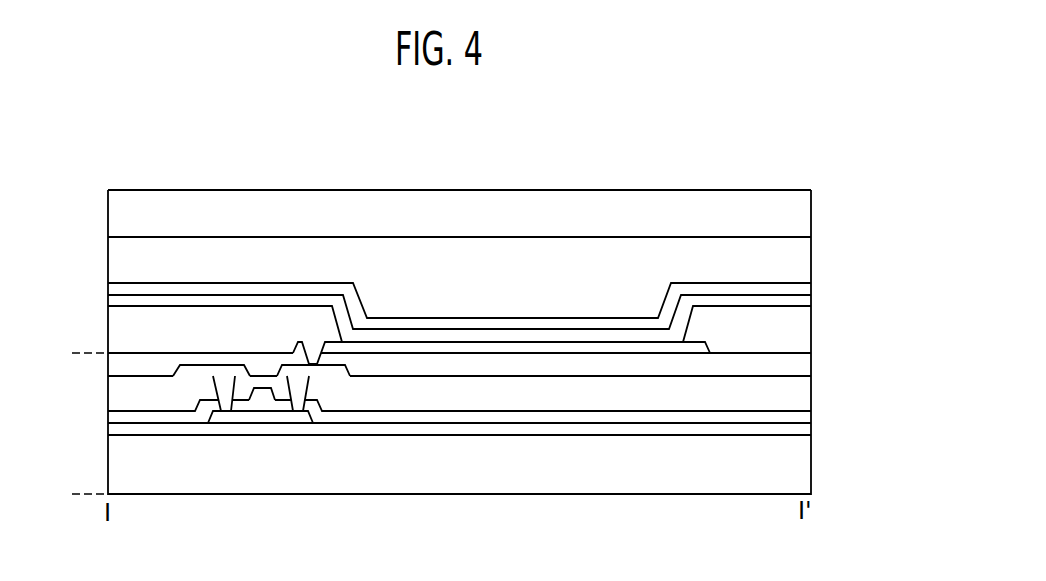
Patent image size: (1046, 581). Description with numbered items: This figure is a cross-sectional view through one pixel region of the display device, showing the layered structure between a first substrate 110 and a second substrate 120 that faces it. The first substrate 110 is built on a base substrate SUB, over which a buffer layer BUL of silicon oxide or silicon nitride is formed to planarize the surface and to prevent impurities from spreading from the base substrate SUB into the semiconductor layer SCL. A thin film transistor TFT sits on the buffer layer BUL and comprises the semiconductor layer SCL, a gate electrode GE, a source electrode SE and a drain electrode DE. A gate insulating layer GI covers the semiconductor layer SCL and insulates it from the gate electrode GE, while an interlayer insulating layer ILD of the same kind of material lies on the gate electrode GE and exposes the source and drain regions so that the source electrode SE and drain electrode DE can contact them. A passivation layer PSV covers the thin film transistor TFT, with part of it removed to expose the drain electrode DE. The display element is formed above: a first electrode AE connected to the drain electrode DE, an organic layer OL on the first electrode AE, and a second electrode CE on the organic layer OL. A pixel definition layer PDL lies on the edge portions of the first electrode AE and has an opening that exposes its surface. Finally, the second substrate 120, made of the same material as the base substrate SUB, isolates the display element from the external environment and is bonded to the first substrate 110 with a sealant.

The second substrate 120 is at (803, 214).
The first substrate 110 is at (83, 353).
The first electrode AE is at (407, 347).
The organic layer OL is at (495, 335).
The second electrode CE is at (575, 325).
The pixel definition layer PDL is at (803, 320).
The passivation layer PSV is at (803, 365).
The interlayer insulating layer ILD is at (803, 393).
The gate insulating layer GI is at (803, 417).
The buffer layer BUL is at (803, 428).
The base substrate SUB is at (803, 477).
The source electrode SE is at (188, 368).
The semiconductor layer SCL is at (260, 474).
The gate electrode GE is at (260, 393).
The drain electrode DE is at (334, 368).
The thin film transistor TFT is at (263, 467).